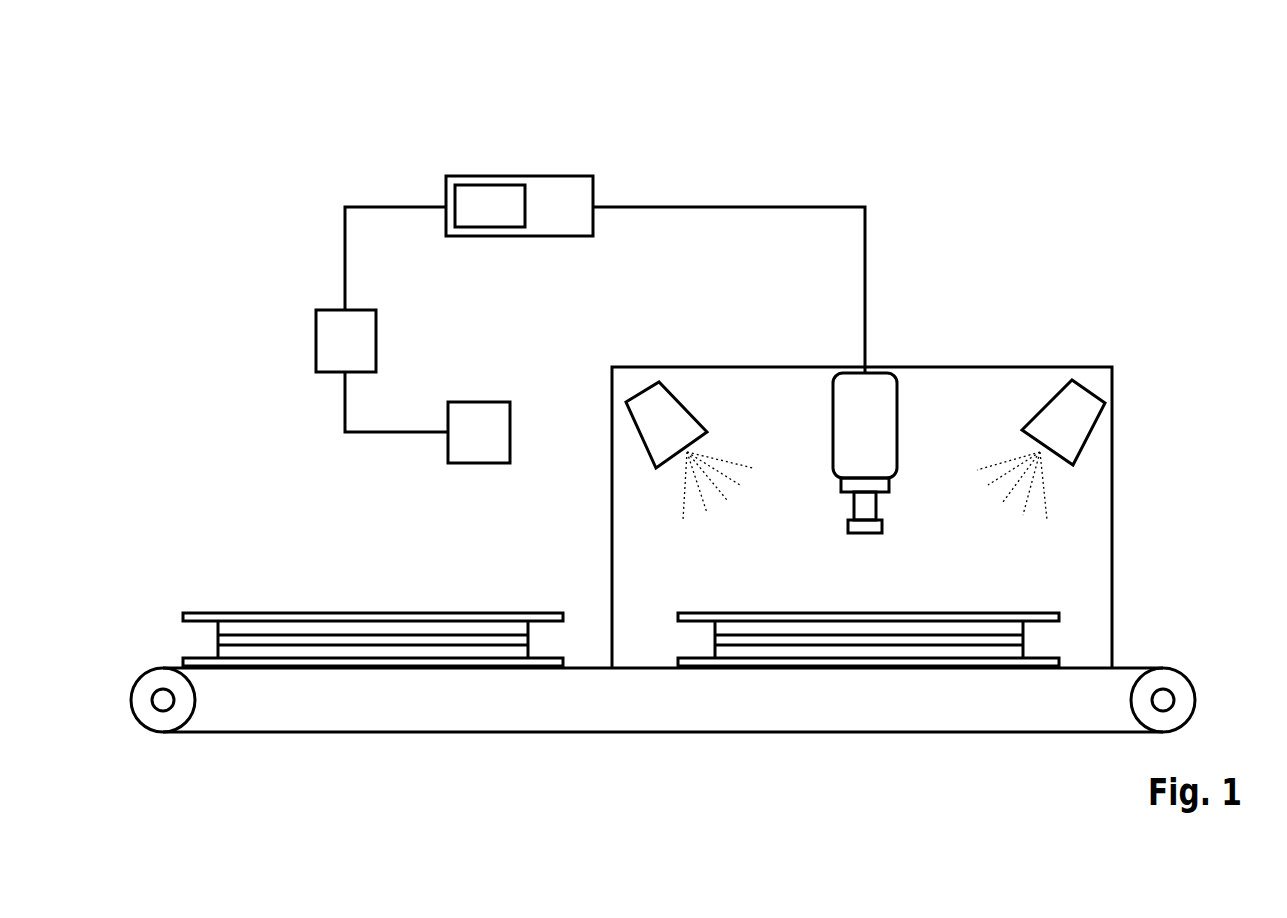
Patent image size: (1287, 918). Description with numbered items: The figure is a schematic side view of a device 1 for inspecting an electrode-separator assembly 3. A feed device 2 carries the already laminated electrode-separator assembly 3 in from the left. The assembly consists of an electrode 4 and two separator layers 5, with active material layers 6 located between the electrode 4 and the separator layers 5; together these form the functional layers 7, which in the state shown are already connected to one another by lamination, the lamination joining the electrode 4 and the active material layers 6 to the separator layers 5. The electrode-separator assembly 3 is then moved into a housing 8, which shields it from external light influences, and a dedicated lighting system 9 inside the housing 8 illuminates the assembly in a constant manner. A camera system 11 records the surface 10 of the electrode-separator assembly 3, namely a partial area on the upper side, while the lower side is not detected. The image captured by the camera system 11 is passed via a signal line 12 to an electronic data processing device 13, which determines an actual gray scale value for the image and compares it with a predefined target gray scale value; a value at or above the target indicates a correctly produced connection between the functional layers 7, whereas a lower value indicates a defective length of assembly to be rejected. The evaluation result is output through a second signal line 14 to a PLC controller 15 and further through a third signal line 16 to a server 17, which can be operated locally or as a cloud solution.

The device 1 is at (1036, 210).
The feed device 2 is at (597, 735).
The electrode-separator assembly 3 is at (621, 600).
The electrode 4 is at (312, 641).
The separator layers 5 is at (236, 612).
The active material layers 6 is at (280, 628).
The functional layers 7 is at (208, 629).
The housing 8 is at (1113, 485).
The lighting system 9 is at (683, 405).
The surface 10 is at (1007, 612).
The camera system 11 is at (848, 380).
The signal line 12 is at (745, 205).
The data processing device 13 is at (550, 185).
The second signal line 14 is at (372, 205).
The PLC controller 15 is at (327, 341).
The third signal line 16 is at (404, 432).
The server 17 is at (478, 410).